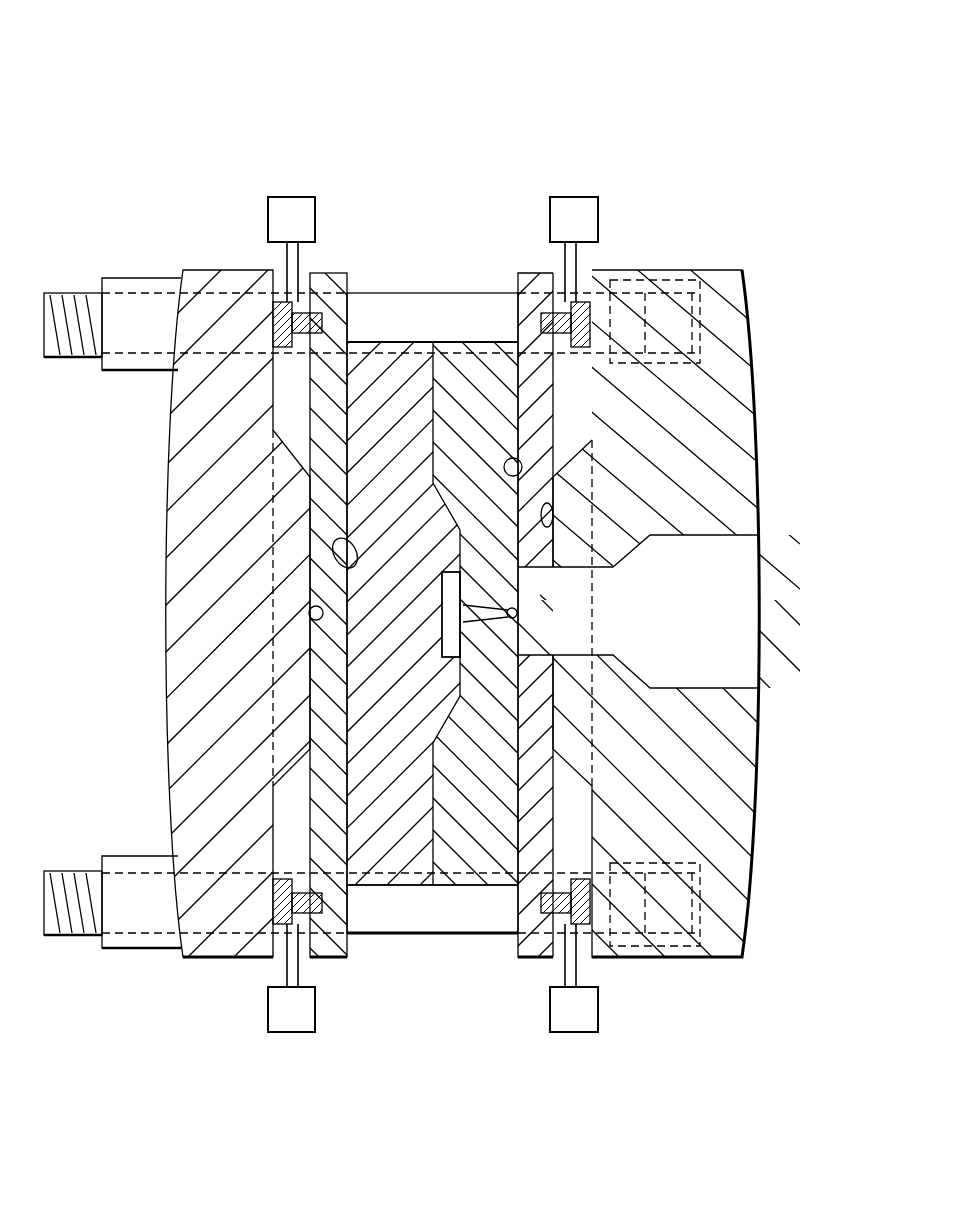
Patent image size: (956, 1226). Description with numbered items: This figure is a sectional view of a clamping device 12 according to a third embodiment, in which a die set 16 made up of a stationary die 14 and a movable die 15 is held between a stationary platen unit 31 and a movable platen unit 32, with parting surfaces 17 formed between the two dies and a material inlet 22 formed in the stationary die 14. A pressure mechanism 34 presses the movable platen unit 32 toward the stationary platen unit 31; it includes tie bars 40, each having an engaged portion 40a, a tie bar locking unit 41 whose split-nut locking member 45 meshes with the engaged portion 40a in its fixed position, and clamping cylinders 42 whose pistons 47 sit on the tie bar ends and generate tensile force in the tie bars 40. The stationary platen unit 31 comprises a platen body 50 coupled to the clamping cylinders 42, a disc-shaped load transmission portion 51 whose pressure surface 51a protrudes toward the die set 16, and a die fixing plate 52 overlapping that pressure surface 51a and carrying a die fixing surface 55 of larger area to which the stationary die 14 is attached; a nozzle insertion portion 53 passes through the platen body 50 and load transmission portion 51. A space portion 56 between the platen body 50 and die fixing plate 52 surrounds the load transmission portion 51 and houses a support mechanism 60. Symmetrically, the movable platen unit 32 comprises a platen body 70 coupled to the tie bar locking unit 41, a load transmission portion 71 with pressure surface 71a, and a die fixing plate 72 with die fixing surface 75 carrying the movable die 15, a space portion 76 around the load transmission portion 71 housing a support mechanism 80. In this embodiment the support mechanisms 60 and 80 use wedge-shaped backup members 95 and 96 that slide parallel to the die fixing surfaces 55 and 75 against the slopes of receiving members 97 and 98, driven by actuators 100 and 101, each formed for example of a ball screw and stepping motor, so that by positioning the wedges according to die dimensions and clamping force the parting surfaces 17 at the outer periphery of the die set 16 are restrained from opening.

The clamping device 12 is at (519, 94).
The stationary die 14 is at (472, 355).
The movable die 15 is at (400, 355).
The die set 16 is at (479, 226).
The parting surfaces 17 is at (436, 770).
The material inlet 22 is at (518, 614).
The stationary platen unit 31 is at (658, 222).
The movable platen unit 32 is at (204, 205).
The pressure mechanism 34 is at (382, 285).
The tie bars 40 is at (480, 300).
The engaged portion 40a is at (85, 295).
The tie bar locking unit 41 is at (110, 259).
The clamping cylinders 42 is at (642, 270).
The locking member 45 is at (150, 300).
The piston 47 is at (677, 328).
The platen body 50 is at (718, 803).
The load transmission portion 51 is at (580, 476).
The pressure surface 51a is at (735, 533).
The die fixing plate 52 is at (630, 705).
The nozzle insertion portion 53 is at (697, 688).
The die fixing surface 55 is at (520, 462).
The space portion 56 is at (575, 405).
The support mechanism 60 is at (594, 157).
The platen body 70 is at (210, 748).
The load transmission portion 71 is at (290, 567).
The pressure surface 71a is at (308, 600).
The die fixing plate 72 is at (323, 672).
The die fixing surface 75 is at (340, 534).
The space portion 76 is at (287, 402).
The support mechanism 80 is at (286, 161).
The backup member 95 is at (583, 277).
The backup member 96 is at (280, 277).
The receiving member 97 is at (562, 277).
The receiving member 98 is at (301, 277).
The actuator 100 is at (565, 197).
The actuator 101 is at (268, 208).